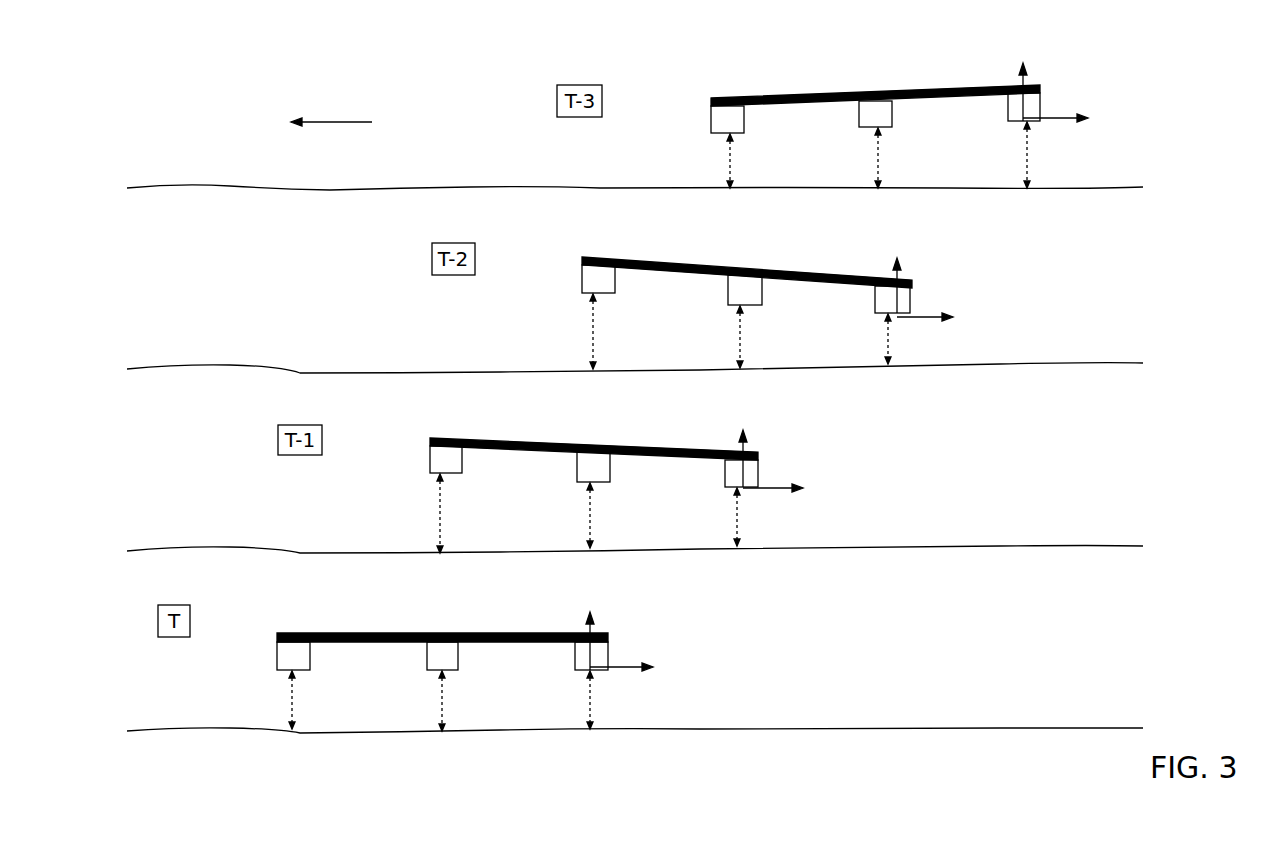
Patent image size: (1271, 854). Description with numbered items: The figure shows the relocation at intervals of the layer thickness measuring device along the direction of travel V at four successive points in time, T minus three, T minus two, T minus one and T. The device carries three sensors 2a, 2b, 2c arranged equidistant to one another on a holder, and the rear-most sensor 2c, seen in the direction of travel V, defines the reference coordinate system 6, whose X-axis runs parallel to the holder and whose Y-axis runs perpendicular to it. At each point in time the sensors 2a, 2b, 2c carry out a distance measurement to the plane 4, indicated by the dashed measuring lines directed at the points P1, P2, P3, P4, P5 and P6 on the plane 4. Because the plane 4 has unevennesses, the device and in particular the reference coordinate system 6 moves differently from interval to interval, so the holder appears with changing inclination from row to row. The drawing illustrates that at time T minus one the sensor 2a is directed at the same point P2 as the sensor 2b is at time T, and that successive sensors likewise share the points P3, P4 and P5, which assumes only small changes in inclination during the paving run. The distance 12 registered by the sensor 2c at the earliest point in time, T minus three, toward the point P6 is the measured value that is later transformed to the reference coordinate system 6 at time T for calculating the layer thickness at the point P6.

The sensor 2a is at (277, 657).
The sensor 2b is at (427, 657).
The sensor 2c is at (575, 656).
The plane 4 is at (433, 188).
The reference coordinate system 6 is at (596, 667).
The distance 12 is at (678, 448).
The direction of travel V is at (331, 109).
The point P1 is at (292, 731).
The point P2 is at (442, 733).
The point P3 is at (590, 731).
The point P4 is at (737, 548).
The point P5 is at (888, 366).
The point P6 is at (1027, 190).